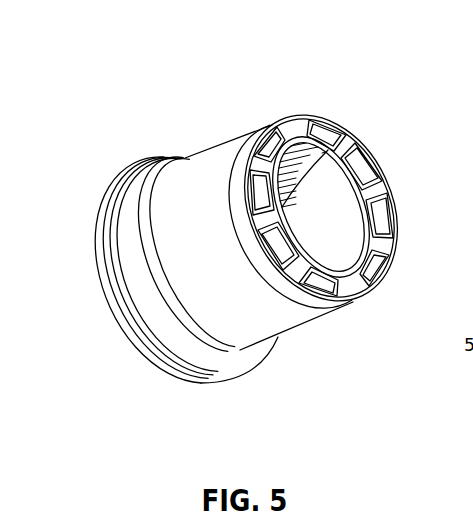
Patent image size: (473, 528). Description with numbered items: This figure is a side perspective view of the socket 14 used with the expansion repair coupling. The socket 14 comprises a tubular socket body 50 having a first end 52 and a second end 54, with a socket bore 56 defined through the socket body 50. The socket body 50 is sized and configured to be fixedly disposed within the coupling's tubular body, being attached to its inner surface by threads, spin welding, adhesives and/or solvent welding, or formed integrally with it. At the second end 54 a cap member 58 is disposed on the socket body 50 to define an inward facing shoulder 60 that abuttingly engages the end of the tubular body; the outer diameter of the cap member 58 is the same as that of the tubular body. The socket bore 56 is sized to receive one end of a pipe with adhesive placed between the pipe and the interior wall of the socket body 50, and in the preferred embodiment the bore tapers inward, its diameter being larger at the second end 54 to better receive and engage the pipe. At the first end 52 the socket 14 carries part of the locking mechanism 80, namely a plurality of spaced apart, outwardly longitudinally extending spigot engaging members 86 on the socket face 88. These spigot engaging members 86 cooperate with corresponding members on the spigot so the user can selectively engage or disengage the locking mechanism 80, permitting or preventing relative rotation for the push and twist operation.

The socket 14 is at (392, 90).
The tubular socket body 50 is at (197, 175).
The first end 52 is at (357, 303).
The second end 54 is at (183, 388).
The socket bore 56 is at (334, 218).
The cap member 58 is at (107, 284).
The inward facing shoulder 60 is at (143, 307).
The locking mechanism 80 is at (295, 123).
The spigot engaging members 86 is at (415, 217).
The socket face 88 is at (407, 269).